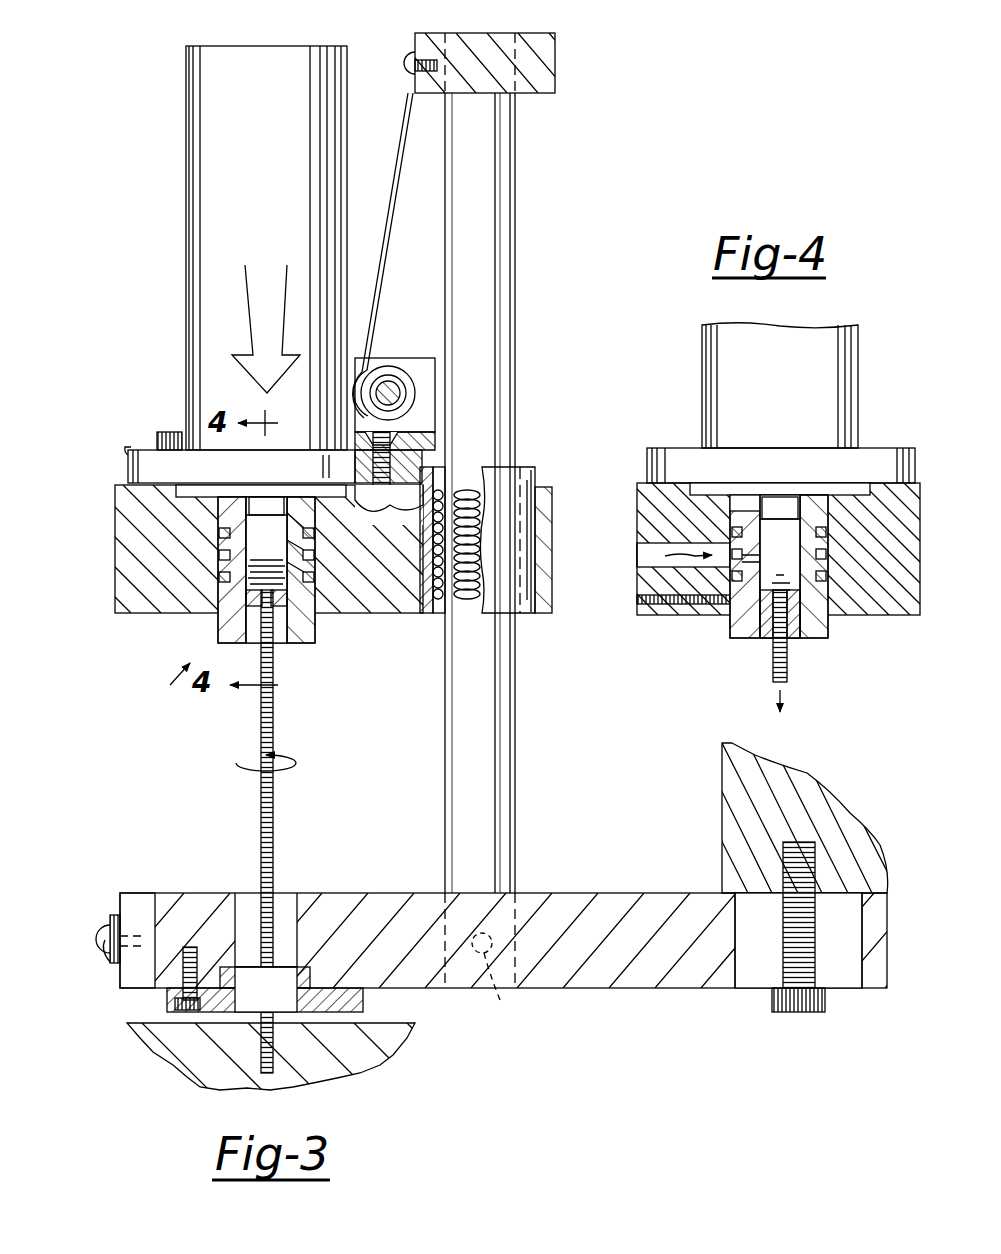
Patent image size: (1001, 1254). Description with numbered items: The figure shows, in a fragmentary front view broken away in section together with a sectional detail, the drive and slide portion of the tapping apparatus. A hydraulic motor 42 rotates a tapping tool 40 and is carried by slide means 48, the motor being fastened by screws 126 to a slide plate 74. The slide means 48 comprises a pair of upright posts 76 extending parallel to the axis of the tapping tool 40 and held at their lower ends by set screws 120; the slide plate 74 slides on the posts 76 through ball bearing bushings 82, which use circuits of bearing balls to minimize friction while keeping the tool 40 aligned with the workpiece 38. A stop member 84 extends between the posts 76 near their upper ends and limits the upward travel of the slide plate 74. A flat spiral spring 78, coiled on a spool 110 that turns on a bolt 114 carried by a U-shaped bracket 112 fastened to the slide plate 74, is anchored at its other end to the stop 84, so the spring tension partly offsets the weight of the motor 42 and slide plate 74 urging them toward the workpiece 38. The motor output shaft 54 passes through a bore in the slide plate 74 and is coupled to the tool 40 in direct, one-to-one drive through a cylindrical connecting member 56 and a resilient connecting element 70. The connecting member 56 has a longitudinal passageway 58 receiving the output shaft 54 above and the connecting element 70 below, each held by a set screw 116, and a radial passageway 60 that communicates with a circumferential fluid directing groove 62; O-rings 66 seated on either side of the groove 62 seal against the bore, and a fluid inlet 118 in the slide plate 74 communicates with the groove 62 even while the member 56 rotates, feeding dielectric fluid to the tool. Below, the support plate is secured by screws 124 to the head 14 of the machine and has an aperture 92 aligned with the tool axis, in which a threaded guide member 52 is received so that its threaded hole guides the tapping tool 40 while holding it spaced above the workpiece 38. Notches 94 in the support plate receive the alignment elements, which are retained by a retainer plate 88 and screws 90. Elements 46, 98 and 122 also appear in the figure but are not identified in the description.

In FIG. 3, the head 14 is at (722, 846).
In FIG. 3, the workpiece 38 is at (332, 1078).
In FIG. 3, the tapping tool 40 is at (274, 812).
In FIG. 4, the tapping tool 40 is at (772, 666).
In FIG. 3, the hydraulic motor 42 is at (268, 188).
In FIG. 4, the hydraulic motor 42 is at (798, 400).
In FIG. 3, the piston assembly 46 is at (158, 694).
In FIG. 3, the slide means 48 is at (553, 270).
In FIG. 3, the threaded guide member 52 is at (360, 998).
In FIG. 3, the output shaft 54 is at (130, 482).
In FIG. 4, the output shaft 54 is at (785, 497).
In FIG. 3, the cylindrical connecting member 56 is at (316, 615).
In FIG. 3, the longitudinal passageway 58 is at (260, 530).
In FIG. 4, the radially extending passageway 60 is at (740, 555).
In FIG. 3, the fluid directing groove 62 is at (219, 555).
In FIG. 3, the O-rings 66 is at (316, 582).
In FIG. 3, the connecting element 70 is at (284, 625).
In FIG. 3, the slide plate 74 is at (125, 613).
In FIG. 4, the slide plate 74 is at (852, 615).
In FIG. 3, the upright posts 76 is at (495, 162).
In FIG. 3, the flat spiral spring 78 is at (400, 133).
In FIG. 3, the ball bearing bushings 82 is at (540, 468).
In FIG. 3, the stop member 84 is at (548, 64).
In FIG. 3, the retainer plate 88 is at (108, 964).
In FIG. 3, the screws 90 is at (104, 935).
In FIG. 3, the aperture 92 is at (295, 893).
In FIG. 3, the notches 94 is at (152, 893).
In FIG. 3, the fastening bolt 98 is at (175, 1006).
In FIG. 3, the spool 110 is at (398, 375).
In FIG. 3, the U-shaped bracket 112 is at (395, 358).
In FIG. 3, the bolt 114 is at (400, 398).
In FIG. 4, the set screw 116 is at (735, 497).
In FIG. 4, the fluid inlet 118 is at (640, 565).
In FIG. 3, the set screws 120 is at (503, 1002).
In FIG. 3, the mounting bolt 122 is at (770, 1008).
In FIG. 3, the screws 124 is at (125, 456).
In FIG. 3, the screws 126 is at (176, 432).